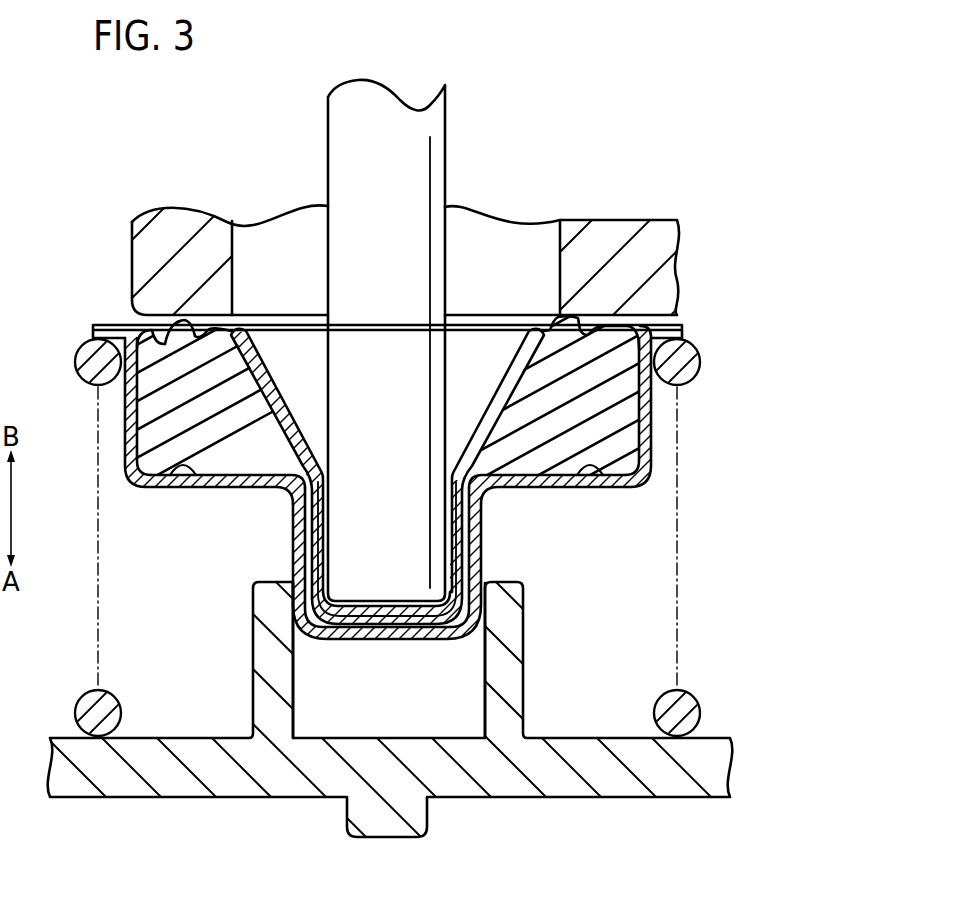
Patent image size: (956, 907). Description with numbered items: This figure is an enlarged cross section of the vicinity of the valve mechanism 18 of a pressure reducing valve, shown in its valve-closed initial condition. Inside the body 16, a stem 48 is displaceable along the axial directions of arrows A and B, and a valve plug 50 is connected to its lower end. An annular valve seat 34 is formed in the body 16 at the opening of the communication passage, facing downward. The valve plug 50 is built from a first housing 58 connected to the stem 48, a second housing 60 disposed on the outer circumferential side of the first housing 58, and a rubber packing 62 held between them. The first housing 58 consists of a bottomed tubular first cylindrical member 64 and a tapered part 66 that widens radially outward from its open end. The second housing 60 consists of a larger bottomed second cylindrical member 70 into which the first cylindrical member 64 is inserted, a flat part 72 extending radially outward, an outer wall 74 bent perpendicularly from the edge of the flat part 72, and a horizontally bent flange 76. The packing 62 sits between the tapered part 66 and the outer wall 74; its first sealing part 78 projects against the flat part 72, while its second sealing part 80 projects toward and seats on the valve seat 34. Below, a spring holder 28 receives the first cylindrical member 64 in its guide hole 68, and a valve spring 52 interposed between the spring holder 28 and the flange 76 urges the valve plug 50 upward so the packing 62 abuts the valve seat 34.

The body 16 is at (689, 249).
The valve mechanism 18 is at (484, 178).
The spring holder 28 is at (425, 496).
The valve seat 34 is at (138, 333).
The stem 48 is at (345, 147).
The valve plug 50 is at (659, 477).
The valve spring 52 is at (698, 374).
The first housing 58 is at (503, 363).
The second housing 60 is at (589, 500).
The packing 62 is at (603, 408).
The first cylindrical member 64 is at (403, 622).
The tapered part 66 is at (258, 373).
The guide hole 68 is at (483, 690).
The second cylindrical member 70 is at (340, 637).
The flat part 72 is at (167, 480).
The outer wall 74 is at (123, 437).
The flange 76 is at (93, 325).
The first sealing part 78 is at (204, 487).
The second sealing part 80 is at (170, 338).